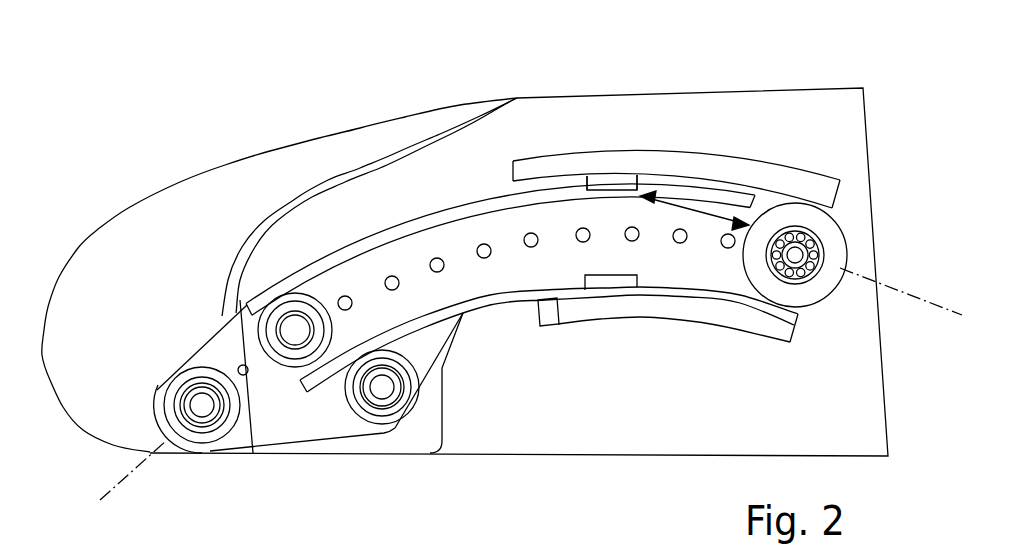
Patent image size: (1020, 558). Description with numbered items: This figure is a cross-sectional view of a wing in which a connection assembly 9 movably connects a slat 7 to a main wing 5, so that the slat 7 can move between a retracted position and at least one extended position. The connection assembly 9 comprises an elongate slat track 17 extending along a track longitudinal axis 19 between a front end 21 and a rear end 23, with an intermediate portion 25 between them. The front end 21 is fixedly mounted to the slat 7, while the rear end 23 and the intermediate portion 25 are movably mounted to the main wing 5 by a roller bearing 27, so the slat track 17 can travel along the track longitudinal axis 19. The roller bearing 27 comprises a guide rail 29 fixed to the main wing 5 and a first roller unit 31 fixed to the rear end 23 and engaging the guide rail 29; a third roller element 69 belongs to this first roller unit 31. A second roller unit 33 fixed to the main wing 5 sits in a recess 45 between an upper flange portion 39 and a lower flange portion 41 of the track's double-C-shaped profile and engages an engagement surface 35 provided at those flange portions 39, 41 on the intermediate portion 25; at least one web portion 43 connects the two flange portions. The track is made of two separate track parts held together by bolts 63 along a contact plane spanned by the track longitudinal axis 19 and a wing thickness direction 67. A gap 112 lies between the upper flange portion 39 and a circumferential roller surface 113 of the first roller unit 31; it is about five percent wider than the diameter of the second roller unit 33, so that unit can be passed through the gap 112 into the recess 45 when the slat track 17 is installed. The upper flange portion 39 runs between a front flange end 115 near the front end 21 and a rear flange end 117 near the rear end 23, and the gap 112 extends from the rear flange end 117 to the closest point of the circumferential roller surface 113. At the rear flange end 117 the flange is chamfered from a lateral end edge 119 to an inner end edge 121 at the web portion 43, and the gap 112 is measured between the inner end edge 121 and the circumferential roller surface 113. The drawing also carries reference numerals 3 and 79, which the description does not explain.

The adjustment device 3 is at (116, 160).
The main wing 5 is at (751, 393).
The slat 7 is at (121, 318).
The connection assembly 9 is at (541, 136).
The slat track 17 is at (460, 225).
The track longitudinal axis 19 is at (946, 313).
The front end 21 is at (313, 423).
The rear end 23 is at (752, 213).
The intermediate portion 25 is at (512, 275).
The roller bearing 27 is at (544, 232).
The guide rail 29 is at (743, 165).
The first roller unit 31 is at (820, 288).
The second roller unit 33 is at (295, 293).
The engagement surface 35 is at (500, 203).
The upper flange portion 39 is at (397, 223).
The lower flange portion 41 is at (575, 284).
The web portion 43 is at (552, 262).
The recess 45 is at (598, 244).
The bolts 63 is at (345, 296).
The wing thickness direction 67 is at (847, 18).
The third roller element 69 is at (834, 240).
The rail end 79 is at (798, 315).
The gap 112 is at (693, 207).
The circumferential roller surface 113 is at (765, 200).
The front flange end 115 is at (249, 453).
The rear flange end 117 is at (610, 183).
The lateral end edge 119 is at (583, 183).
The inner end edge 121 is at (641, 183).